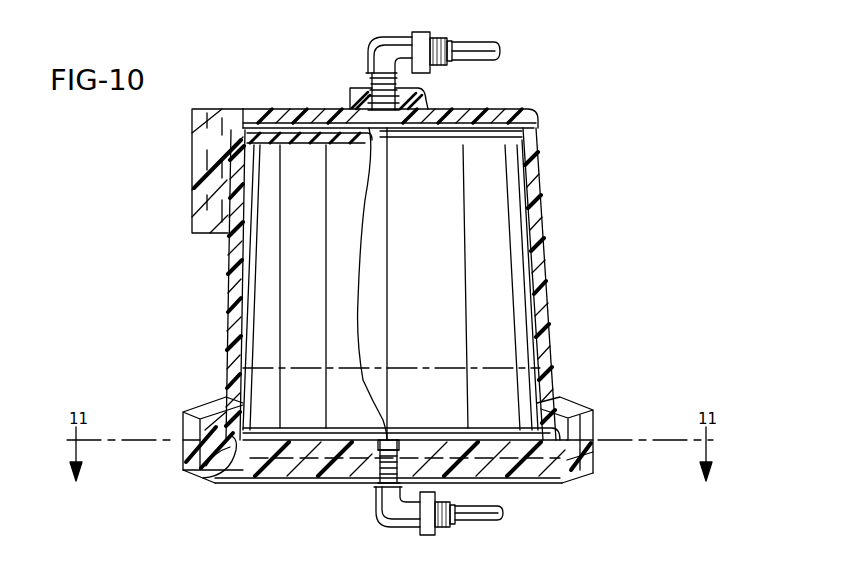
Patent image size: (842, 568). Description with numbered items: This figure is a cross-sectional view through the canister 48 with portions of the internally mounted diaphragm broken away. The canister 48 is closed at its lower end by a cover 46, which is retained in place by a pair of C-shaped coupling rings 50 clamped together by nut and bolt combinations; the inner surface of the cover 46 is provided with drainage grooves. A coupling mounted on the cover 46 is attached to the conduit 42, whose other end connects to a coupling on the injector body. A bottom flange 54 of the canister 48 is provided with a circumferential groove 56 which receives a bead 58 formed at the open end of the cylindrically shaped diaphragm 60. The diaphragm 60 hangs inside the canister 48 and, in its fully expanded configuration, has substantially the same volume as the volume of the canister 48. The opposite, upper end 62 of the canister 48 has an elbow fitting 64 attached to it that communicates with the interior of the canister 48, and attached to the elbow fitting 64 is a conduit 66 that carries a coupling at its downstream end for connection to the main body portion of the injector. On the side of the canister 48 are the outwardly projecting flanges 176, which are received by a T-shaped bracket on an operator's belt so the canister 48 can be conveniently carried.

The conduit 42 is at (480, 521).
The cover 46 is at (312, 467).
The canister 48 is at (229, 272).
The C-shaped coupling rings 50 is at (184, 476).
The bottom flange 54 is at (567, 417).
The circumferential groove 56 is at (210, 403).
The bead 58 is at (213, 475).
The diaphragm 60 is at (241, 338).
The upper end 62 is at (528, 110).
The elbow fitting 64 is at (369, 66).
The conduit 66 is at (486, 47).
The outwardly projecting flanges 176 is at (190, 202).